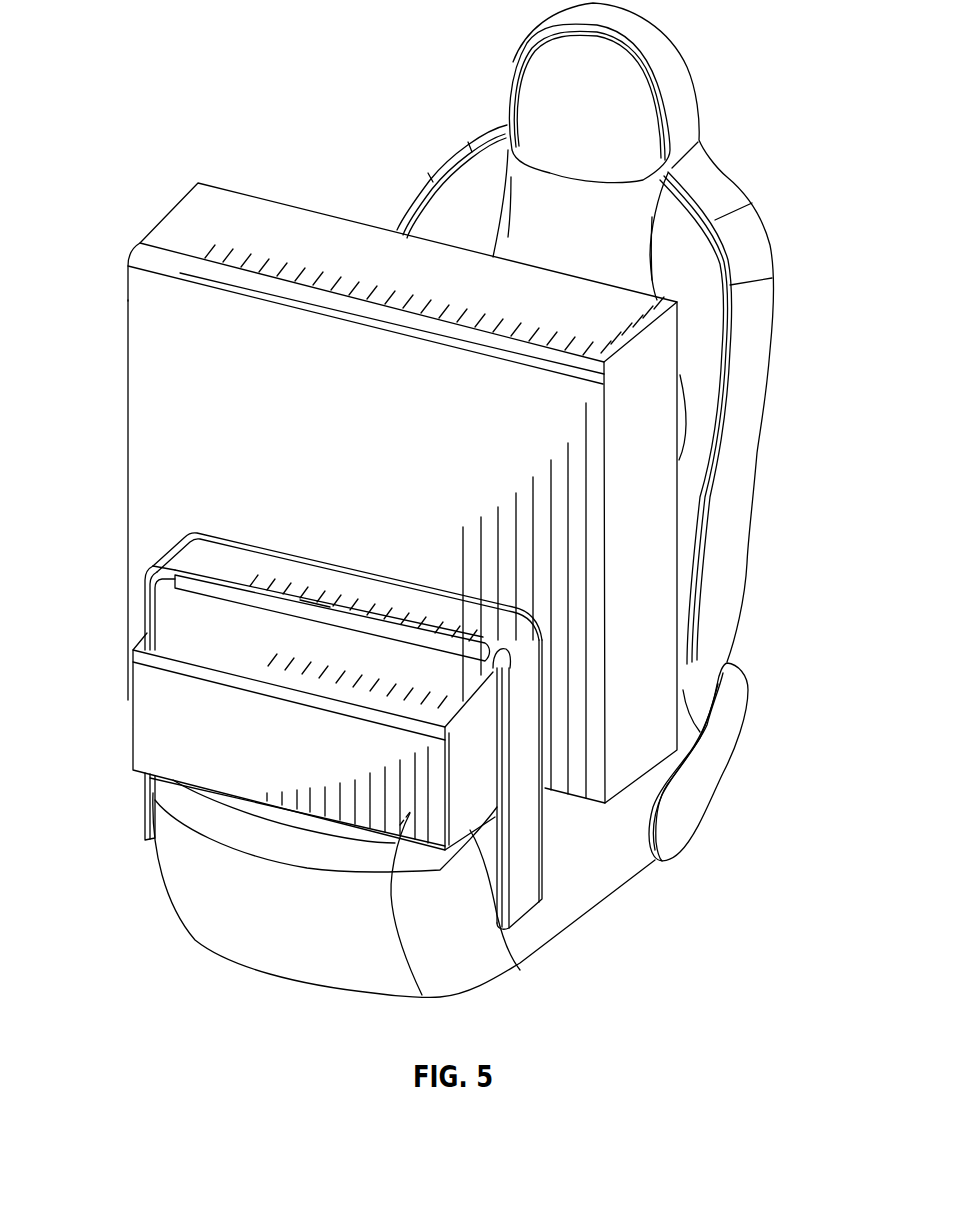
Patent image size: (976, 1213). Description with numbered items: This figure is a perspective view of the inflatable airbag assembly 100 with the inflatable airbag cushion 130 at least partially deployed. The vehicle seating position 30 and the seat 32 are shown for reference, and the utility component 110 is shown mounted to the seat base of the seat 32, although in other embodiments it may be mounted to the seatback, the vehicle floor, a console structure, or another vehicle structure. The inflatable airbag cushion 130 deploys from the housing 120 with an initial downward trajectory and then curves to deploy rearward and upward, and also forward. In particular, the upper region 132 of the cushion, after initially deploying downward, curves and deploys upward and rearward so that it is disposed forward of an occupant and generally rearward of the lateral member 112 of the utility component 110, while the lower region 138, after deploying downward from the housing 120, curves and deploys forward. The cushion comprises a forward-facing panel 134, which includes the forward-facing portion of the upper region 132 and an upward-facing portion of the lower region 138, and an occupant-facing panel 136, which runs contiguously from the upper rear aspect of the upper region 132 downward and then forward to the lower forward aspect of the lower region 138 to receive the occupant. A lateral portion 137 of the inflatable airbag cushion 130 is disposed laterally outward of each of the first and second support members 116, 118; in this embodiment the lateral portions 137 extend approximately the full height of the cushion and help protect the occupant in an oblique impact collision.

The inflatable airbag assembly 100 is at (106, 38).
The vehicle seating position 30 is at (400, 103).
The seat 32 is at (757, 455).
The utility component 110 is at (213, 540).
The lateral member 112 is at (300, 572).
The first support member 116 is at (145, 603).
The second support member 118 is at (525, 743).
The housing 120 is at (322, 620).
The inflatable airbag cushion 130 is at (128, 333).
The upper region 132 is at (474, 423).
The forward-facing panel 134 is at (163, 388).
The occupant-facing panel 136 is at (300, 222).
The lateral portion 137 is at (128, 558).
The lower region 138 is at (332, 755).